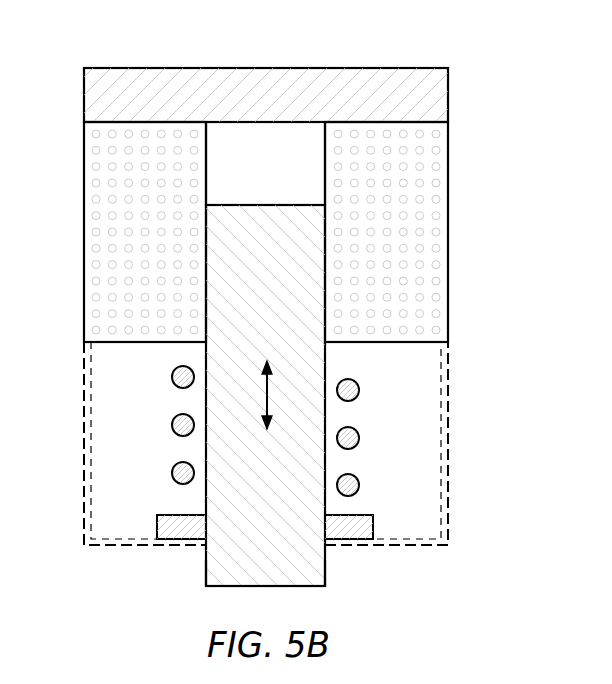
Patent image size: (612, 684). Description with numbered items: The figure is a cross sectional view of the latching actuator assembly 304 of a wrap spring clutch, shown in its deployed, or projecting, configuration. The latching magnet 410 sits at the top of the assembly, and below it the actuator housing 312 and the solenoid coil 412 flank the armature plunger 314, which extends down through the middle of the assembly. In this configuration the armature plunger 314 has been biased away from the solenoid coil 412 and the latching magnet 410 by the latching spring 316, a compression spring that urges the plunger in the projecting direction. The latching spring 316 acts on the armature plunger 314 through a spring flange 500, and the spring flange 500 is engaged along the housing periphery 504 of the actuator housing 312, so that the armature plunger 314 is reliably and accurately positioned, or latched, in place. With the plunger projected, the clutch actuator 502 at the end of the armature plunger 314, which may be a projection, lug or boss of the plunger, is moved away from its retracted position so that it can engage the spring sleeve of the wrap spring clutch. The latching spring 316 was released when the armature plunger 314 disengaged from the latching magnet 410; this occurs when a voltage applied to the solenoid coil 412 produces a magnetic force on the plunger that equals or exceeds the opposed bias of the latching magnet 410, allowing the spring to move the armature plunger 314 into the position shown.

The latching actuator assembly 304 is at (146, 38).
The latching magnet 410 is at (433, 95).
The actuator housing 312 is at (84, 230).
The solenoid coil 412 is at (437, 229).
The armature plunger 314 is at (223, 402).
The latching spring 316 is at (362, 437).
The spring flange 500 is at (350, 515).
The clutch actuator 502 is at (265, 588).
The housing periphery 504 is at (385, 547).